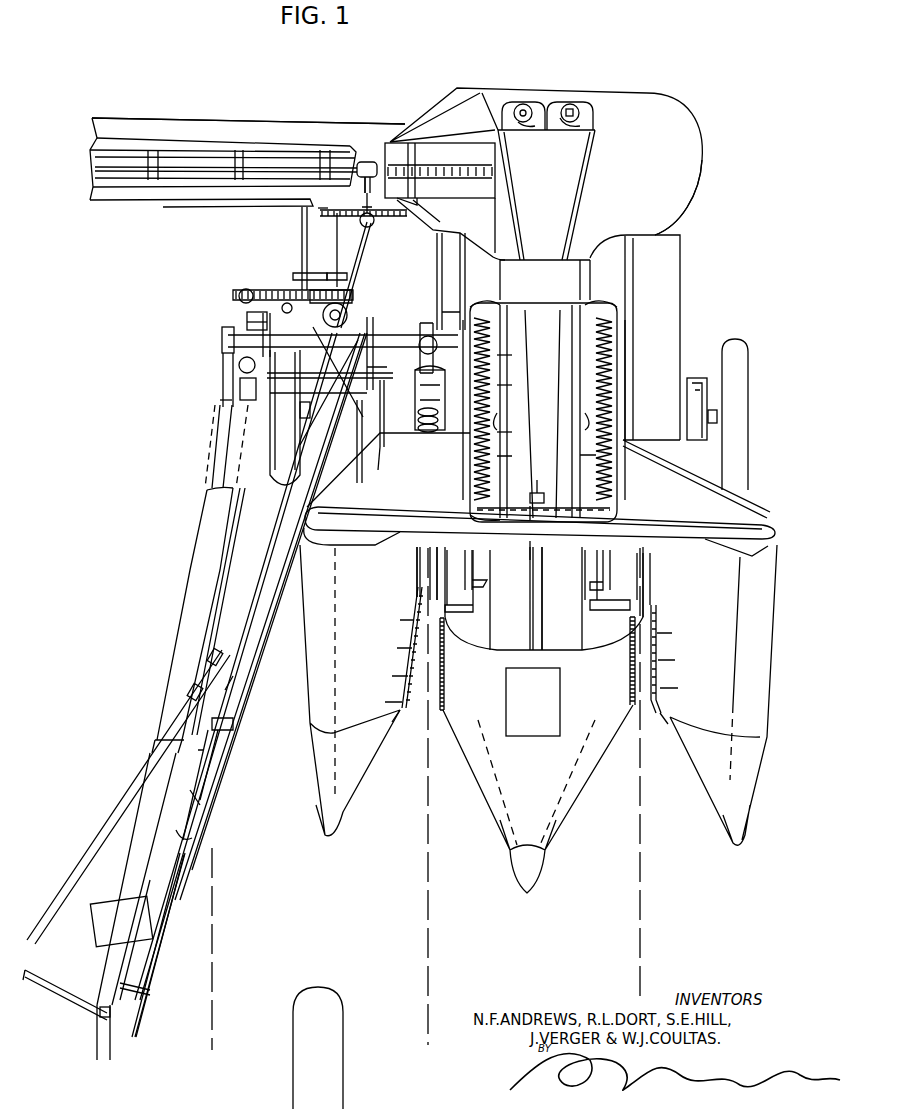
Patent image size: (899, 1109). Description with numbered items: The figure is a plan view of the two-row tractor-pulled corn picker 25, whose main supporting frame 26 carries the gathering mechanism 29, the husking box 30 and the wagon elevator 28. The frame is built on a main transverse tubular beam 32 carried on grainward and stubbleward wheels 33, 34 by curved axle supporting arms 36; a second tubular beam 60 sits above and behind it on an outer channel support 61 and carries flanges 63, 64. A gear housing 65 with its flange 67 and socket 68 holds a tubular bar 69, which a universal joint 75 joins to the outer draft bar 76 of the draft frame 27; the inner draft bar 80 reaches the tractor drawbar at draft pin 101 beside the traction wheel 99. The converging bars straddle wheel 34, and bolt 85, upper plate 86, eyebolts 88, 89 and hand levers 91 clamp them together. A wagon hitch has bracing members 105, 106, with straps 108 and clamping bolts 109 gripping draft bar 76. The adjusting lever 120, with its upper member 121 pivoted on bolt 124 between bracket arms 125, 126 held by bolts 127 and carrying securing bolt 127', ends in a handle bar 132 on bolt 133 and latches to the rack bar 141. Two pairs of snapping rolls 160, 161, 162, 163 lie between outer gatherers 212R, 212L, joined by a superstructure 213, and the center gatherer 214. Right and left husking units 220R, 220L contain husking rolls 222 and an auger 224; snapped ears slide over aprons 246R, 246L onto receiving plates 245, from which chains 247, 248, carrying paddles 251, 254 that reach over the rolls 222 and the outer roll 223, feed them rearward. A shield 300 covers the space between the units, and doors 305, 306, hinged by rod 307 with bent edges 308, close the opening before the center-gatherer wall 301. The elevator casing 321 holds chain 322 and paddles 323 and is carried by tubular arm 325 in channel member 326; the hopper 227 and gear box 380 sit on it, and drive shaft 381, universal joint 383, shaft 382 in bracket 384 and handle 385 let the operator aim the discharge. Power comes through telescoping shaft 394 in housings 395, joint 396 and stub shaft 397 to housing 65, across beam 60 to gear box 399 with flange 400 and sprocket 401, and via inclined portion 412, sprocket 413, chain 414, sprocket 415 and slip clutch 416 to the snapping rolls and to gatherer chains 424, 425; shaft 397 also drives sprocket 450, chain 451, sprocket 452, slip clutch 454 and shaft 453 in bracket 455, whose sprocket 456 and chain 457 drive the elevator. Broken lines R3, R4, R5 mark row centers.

The corn picker 25 is at (722, 268).
The main supporting frame 26 is at (701, 365).
The draft frame 27 is at (266, 667).
The wagon elevator 28 is at (297, 108).
The gathering mechanism 29 is at (788, 579).
The husking box 30 is at (611, 263).
The main transverse tubular supporting beam 32 is at (418, 340).
The ground engaging wheel 33 is at (750, 350).
The ground engaging wheel 34 is at (280, 487).
The axle supporting arm 36 is at (716, 423).
The second transverse tubular frame beam 60 is at (370, 338).
The outer support 61 is at (330, 360).
The flange 63 is at (270, 340).
The flange 64 is at (500, 357).
The gear housing 65 is at (247, 318).
The flange 67 is at (247, 326).
The socket portion 68 is at (222, 340).
The tubular bar 69 is at (223, 380).
The universal joint 75 is at (213, 418).
The draft bar 76 is at (222, 595).
The draft bar 80 is at (272, 612).
The vertical bolt 85 is at (172, 748).
The upper plate 86 is at (205, 780).
The eyebolts 88 is at (233, 724).
The eyebolts 89 is at (195, 838).
The hand lever 91 is at (208, 758).
The traction wheel 99 is at (333, 1003).
The draft pin 101 is at (100, 1012).
The bracing member 105 is at (55, 984).
The bracing member 106 is at (90, 855).
The straps 108 is at (218, 650).
The clamping bolts 109 is at (195, 690).
The adjusting lever 120 is at (277, 548).
The upper member 121 is at (236, 682).
The pivot bolt 124 is at (370, 375).
The bracket arm 125 is at (330, 392).
The bracket arm 126 is at (380, 470).
The bolts 127 is at (329, 372).
The securing bolt 127' is at (366, 441).
The handle bar 132 is at (135, 955).
The bolt 133 is at (150, 926).
The rack bar 141 is at (150, 917).
The snapping roll 160 is at (417, 574).
The snapping roll 161 is at (436, 582).
The snapping roll 162 is at (640, 584).
The snapping roll 163 is at (652, 602).
The outer gatherer 212R is at (350, 667).
The outer gatherer 212L is at (680, 667).
The superstructure 213 is at (582, 550).
The center gatherer 214 is at (560, 760).
The combined conveyor and husking unit 220R is at (487, 313).
The combined conveyor and husking unit 220L is at (575, 300).
The husking rolls 222 is at (496, 350).
The outer snapping roll 223 is at (500, 388).
The auger 224 is at (560, 104).
The hopper 227 is at (655, 108).
The ear-receiving plate 245 is at (482, 572).
The apron 246R is at (470, 605).
The apron 246L is at (620, 565).
The inner conveyor chain 247 is at (585, 415).
The outer conveyor chain 248 is at (615, 478).
The paddles 251 is at (580, 458).
The ear-engaging paddles 254 is at (500, 435).
The shield 300 is at (527, 313).
The vertical wall 301 is at (590, 620).
The panel 305 is at (612, 510).
The panel 306 is at (470, 515).
The hinge rod 307 is at (537, 491).
The bent edges 308 is at (531, 541).
The casing structure 321 is at (204, 128).
The elevator chain 322 is at (430, 165).
The crop engaging paddles 323 is at (336, 150).
The tubular arm 325 is at (326, 268).
The channel-shaped member 326 is at (330, 290).
The gear box 380 is at (395, 142).
The drive shaft 381 is at (360, 210).
The manually rotatable shaft 382 is at (352, 270).
The universal joint 383 is at (373, 224).
The bracket 384 is at (150, 990).
The handle 385 is at (140, 1034).
The telescoping power shaft 394 is at (214, 477).
The telescoping housing sections 395 is at (160, 736).
The universal joint 396 is at (240, 390).
The splined stub shaft 397 is at (240, 372).
The second gear box 399 is at (430, 336).
The flange 400 is at (428, 318).
The sprocket 401 is at (463, 308).
The inclined portion 412 is at (420, 396).
The sprocket 413 is at (422, 420).
The power transmission chain 414 is at (442, 432).
The sprocket 415 is at (386, 447).
The slip clutch mechanism 416 is at (424, 428).
The gatherer chains 424 is at (408, 694).
The inner gatherer chains 425 is at (446, 690).
The sprocket 450 is at (240, 292).
The chain 451 is at (280, 300).
The sprocket 452 is at (335, 296).
The shaft 453 is at (347, 240).
The slip clutch mechanism 454 is at (260, 307).
The bracket support 455 is at (305, 262).
The sprocket 456 is at (318, 213).
The chain 457 is at (410, 203).
The row center R3 is at (214, 952).
The row center R4 is at (430, 970).
The row center R5 is at (641, 960).